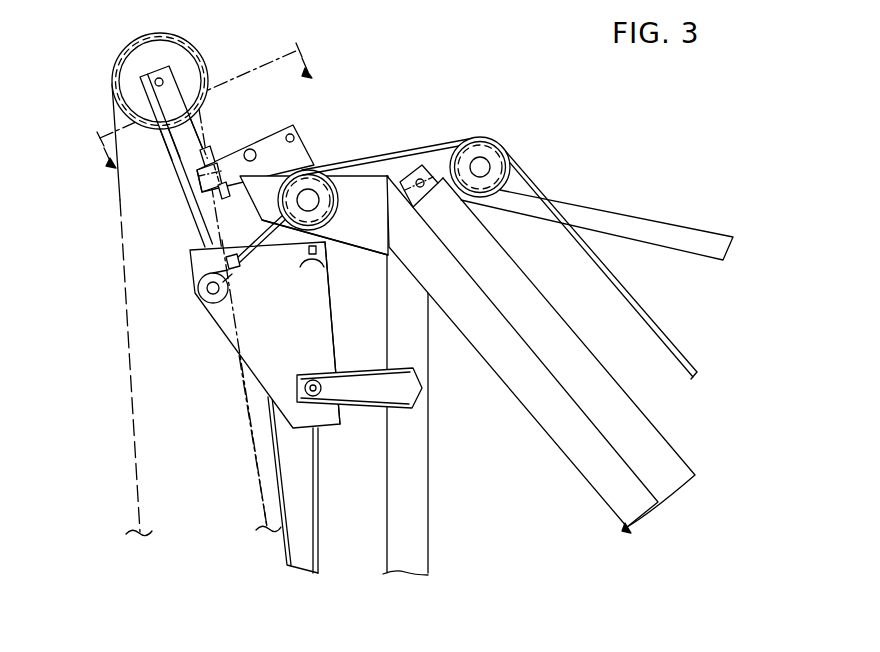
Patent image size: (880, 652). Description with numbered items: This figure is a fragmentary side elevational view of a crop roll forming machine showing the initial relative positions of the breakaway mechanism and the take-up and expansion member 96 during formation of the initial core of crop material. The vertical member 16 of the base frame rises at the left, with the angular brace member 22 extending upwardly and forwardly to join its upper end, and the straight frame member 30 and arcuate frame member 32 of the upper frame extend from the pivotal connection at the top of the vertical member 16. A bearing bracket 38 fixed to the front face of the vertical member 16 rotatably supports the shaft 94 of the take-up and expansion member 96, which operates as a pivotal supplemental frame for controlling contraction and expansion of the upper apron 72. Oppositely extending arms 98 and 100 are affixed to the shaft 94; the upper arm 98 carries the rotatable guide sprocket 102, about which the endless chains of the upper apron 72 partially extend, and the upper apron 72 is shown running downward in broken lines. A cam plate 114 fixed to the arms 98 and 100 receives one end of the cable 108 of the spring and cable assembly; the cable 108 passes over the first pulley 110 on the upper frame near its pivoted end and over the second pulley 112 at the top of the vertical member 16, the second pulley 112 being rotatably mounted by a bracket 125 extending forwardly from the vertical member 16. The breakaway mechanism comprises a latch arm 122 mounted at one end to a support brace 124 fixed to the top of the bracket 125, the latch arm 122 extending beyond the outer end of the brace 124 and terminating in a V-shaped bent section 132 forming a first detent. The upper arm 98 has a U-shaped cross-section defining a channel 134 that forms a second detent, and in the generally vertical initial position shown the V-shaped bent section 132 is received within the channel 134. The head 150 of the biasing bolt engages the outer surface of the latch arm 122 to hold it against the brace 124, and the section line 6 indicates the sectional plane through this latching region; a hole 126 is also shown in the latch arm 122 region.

The section line 6- 6 is at (199, 100).
The vertical member 16 is at (418, 451).
The angular brace member 22 is at (557, 433).
The straight frame member 30 is at (576, 340).
The arcuate frame member 32 is at (658, 226).
The bearing bracket 38 is at (373, 409).
The upper apron 72 is at (120, 397).
The shaft 94 is at (321, 378).
The take-up and expansion member 96 is at (214, 347).
The upper arm 98 is at (206, 223).
The arm 100 is at (320, 533).
The guide sprocket 102 is at (178, 62).
The cable 108 is at (667, 300).
The first pulley 110 is at (498, 140).
The second pulley 112 is at (331, 199).
The cam plate 114 is at (327, 333).
The latch arm 122 is at (272, 132).
The support brace 124 is at (305, 155).
The bracket 125 is at (363, 237).
The mounting hole 126 is at (293, 134).
The V-shaped bent section 132 is at (209, 156).
The channel 134 is at (192, 172).
The head 150 is at (252, 149).